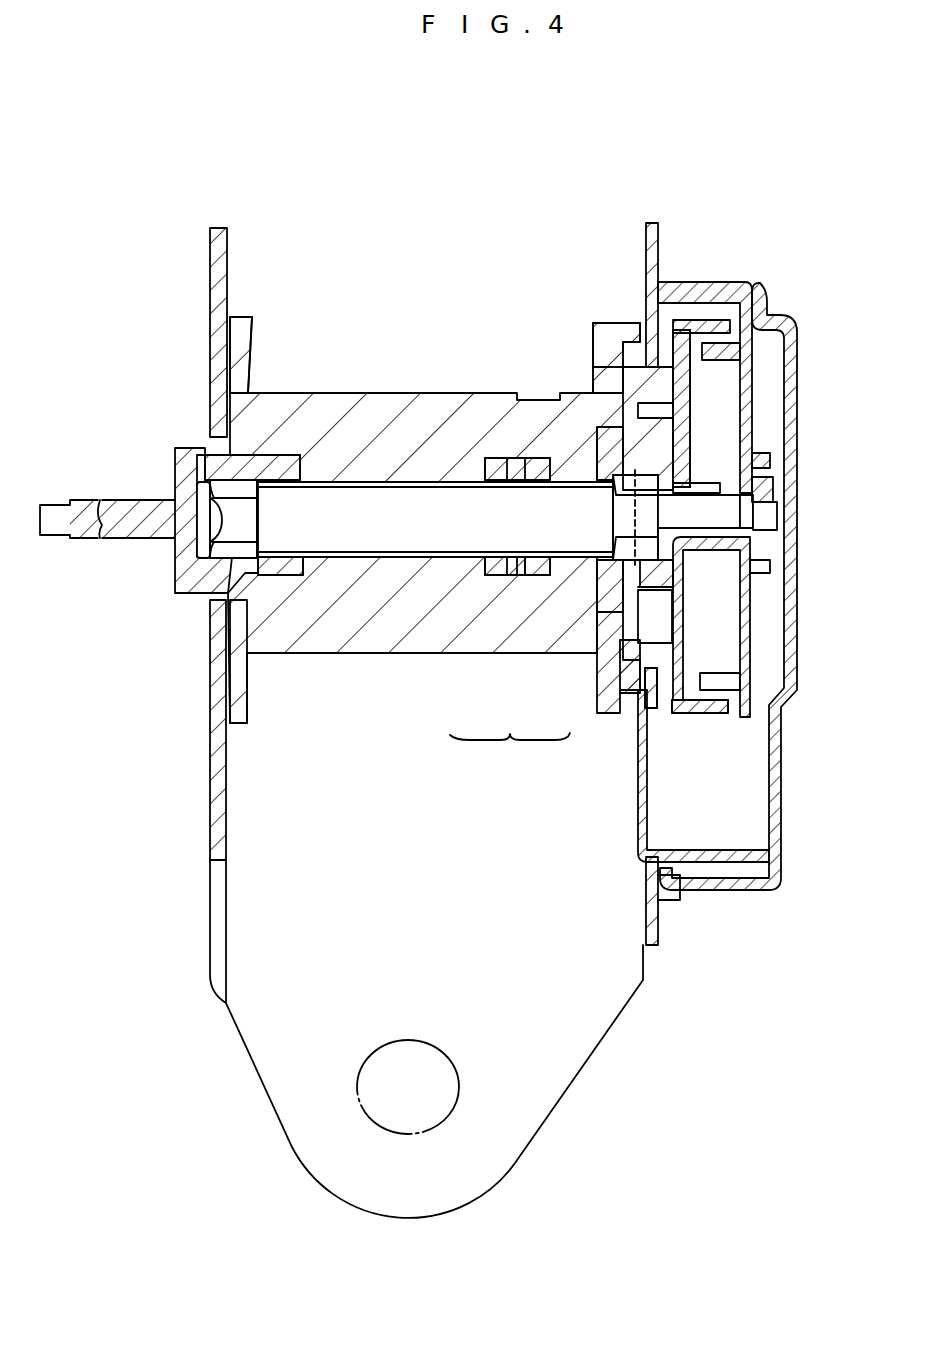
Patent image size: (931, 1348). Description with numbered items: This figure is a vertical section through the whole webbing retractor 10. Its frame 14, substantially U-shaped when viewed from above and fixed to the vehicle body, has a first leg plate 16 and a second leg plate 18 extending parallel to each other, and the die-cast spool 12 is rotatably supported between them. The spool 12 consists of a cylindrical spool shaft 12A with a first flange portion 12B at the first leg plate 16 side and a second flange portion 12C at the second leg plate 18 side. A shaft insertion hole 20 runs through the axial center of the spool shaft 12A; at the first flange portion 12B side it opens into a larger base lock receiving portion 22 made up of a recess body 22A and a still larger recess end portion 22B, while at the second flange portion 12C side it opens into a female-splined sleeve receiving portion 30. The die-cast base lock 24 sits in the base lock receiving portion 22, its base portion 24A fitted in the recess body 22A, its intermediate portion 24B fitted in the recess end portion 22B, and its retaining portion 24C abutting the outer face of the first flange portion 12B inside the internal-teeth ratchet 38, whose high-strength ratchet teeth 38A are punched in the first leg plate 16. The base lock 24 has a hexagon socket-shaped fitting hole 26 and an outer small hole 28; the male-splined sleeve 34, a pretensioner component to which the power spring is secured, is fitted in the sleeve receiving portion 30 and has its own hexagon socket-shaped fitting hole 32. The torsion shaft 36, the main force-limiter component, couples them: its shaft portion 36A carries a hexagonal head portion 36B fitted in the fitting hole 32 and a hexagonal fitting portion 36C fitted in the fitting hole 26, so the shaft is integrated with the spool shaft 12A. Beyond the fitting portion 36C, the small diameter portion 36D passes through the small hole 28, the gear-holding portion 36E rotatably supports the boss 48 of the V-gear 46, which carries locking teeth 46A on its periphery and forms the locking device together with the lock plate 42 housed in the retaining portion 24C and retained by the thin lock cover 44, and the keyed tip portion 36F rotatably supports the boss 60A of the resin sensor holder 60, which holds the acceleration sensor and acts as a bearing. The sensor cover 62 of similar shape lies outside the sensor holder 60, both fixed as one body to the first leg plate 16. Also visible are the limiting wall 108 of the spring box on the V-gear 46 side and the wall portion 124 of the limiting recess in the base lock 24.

The webbing retractor 10 is at (570, 180).
The spool 12 is at (325, 392).
The spool shaft 12A is at (392, 405).
The first flange portion 12B is at (606, 328).
The second flange portion 12C is at (246, 340).
The frame 14 is at (208, 740).
The first leg plate 16 is at (665, 218).
The second leg plate 18 is at (228, 240).
The shaft insertion hole 20 is at (355, 563).
The base lock receiving portion 22 is at (510, 749).
The recess body 22A is at (498, 578).
The recess end portion 22B is at (560, 578).
The base lock 24 is at (625, 675).
The base portion 24A is at (505, 462).
The intermediate portion 24B is at (605, 430).
The retaining portion 24C is at (600, 350).
The fitting hole 26 is at (468, 568).
The small hole 28 is at (700, 540).
The sleeve receiving portion 30 is at (275, 472).
The fitting hole 32 is at (300, 578).
The sleeve 34 is at (125, 542).
The torsion shaft 36 is at (445, 478).
The shaft portion 36A is at (392, 560).
The head portion 36B is at (232, 562).
The fitting portion 36C is at (610, 512).
The small diameter portion 36D is at (708, 512).
The gear-holding portion 36E is at (750, 500).
The tip portion 36F is at (772, 518).
The internal-teeth ratchet 38 is at (651, 688).
The ratchet teeth 38A is at (645, 690).
The lock plate 42 is at (668, 408).
The lock cover 44 is at (670, 350).
The V-gear 46 is at (695, 635).
The locking teeth 46A is at (703, 715).
The boss 48 is at (770, 567).
The sensor holder 60 is at (755, 430).
The boss 60A is at (760, 492).
The sensor cover 62 is at (800, 405).
The limiting wall 108 is at (638, 830).
The wall portion 124 is at (779, 785).